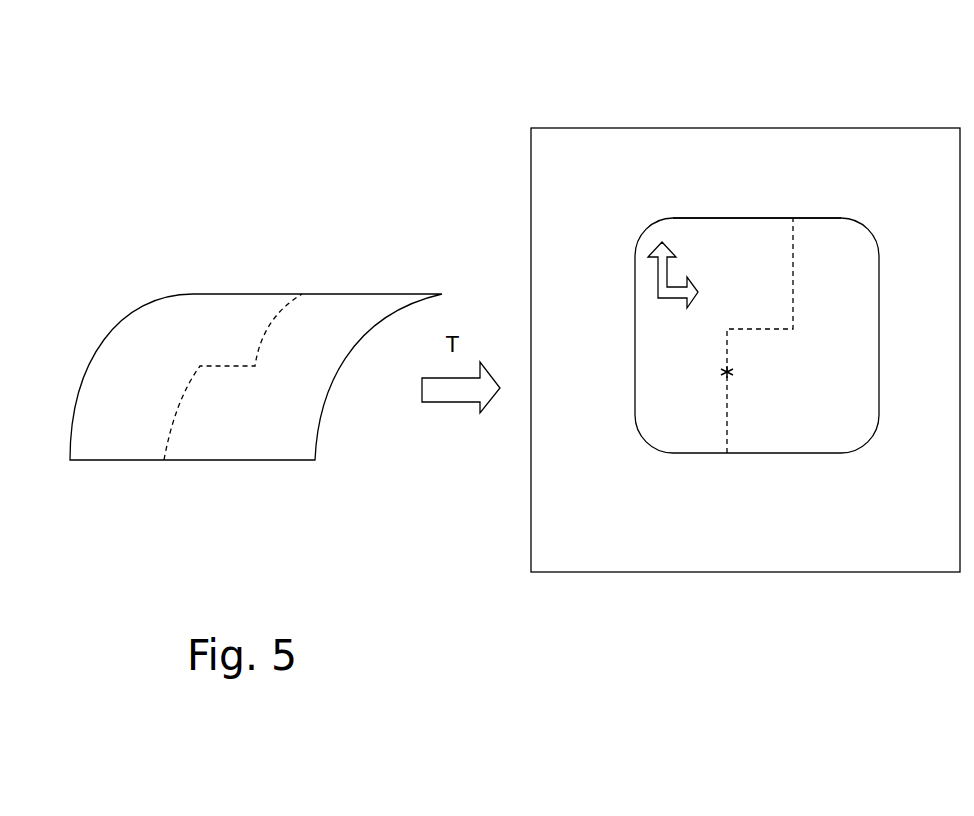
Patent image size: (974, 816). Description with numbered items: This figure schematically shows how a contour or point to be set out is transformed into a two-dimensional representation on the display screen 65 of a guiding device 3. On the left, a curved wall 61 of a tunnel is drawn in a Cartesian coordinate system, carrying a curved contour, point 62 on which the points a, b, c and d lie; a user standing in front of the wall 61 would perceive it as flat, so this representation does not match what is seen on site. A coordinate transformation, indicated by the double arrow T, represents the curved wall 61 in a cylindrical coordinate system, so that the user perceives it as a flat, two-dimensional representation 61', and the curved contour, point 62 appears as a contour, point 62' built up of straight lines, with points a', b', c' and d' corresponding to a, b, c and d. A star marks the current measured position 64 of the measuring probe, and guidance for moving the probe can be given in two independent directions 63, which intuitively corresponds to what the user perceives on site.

The guiding device 3 is at (592, 560).
The curved wall 61 is at (256, 403).
The contour, point 62 is at (240, 392).
The flat two-dimensional representation 61' is at (757, 362).
The transformed contour, point 62' is at (727, 351).
The two independent directions 63 is at (658, 278).
The current measured position 64 is at (727, 373).
The display screen 65 is at (835, 217).